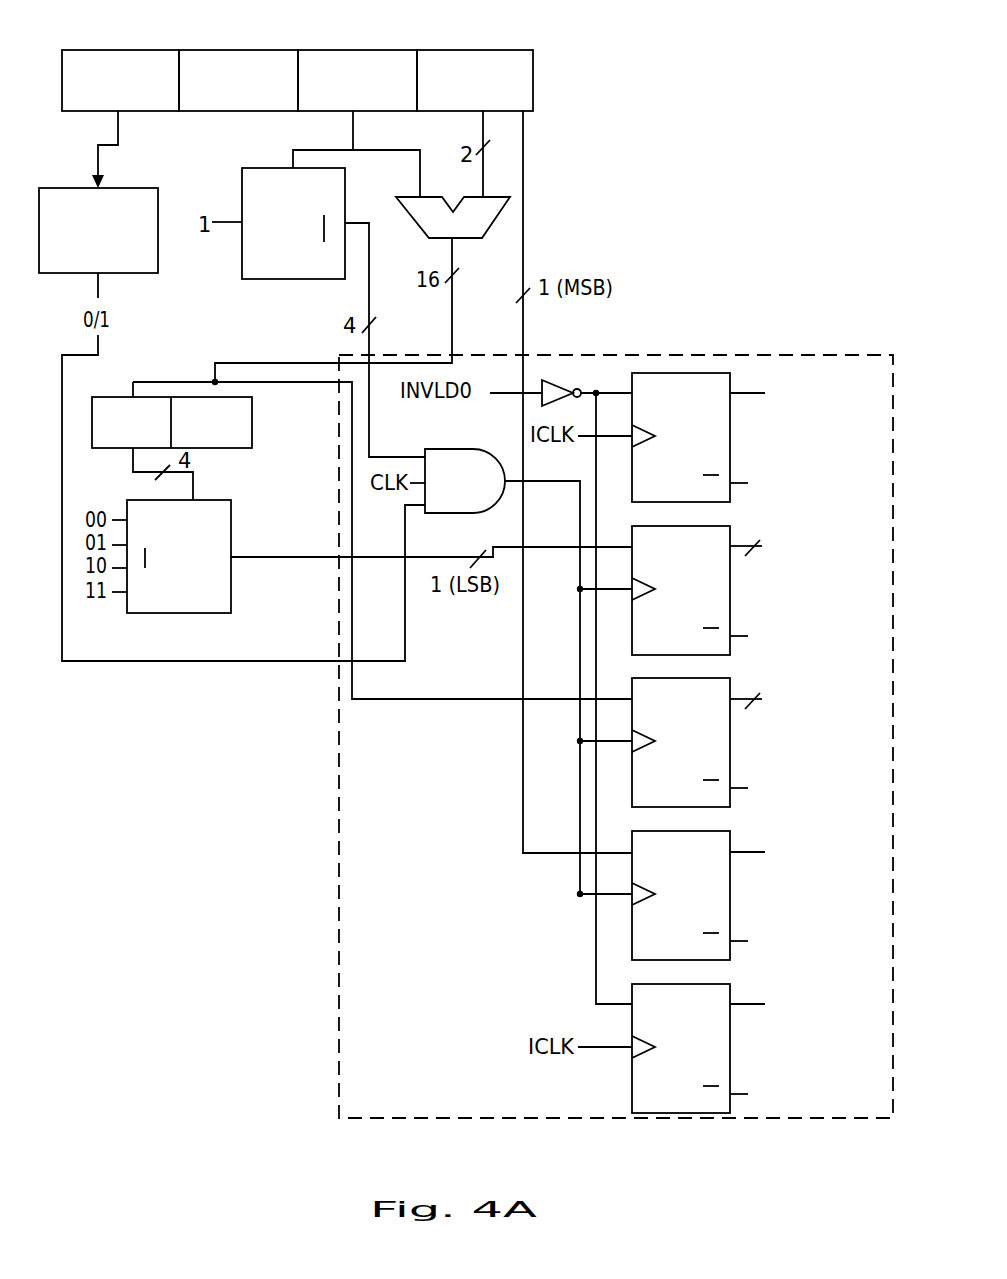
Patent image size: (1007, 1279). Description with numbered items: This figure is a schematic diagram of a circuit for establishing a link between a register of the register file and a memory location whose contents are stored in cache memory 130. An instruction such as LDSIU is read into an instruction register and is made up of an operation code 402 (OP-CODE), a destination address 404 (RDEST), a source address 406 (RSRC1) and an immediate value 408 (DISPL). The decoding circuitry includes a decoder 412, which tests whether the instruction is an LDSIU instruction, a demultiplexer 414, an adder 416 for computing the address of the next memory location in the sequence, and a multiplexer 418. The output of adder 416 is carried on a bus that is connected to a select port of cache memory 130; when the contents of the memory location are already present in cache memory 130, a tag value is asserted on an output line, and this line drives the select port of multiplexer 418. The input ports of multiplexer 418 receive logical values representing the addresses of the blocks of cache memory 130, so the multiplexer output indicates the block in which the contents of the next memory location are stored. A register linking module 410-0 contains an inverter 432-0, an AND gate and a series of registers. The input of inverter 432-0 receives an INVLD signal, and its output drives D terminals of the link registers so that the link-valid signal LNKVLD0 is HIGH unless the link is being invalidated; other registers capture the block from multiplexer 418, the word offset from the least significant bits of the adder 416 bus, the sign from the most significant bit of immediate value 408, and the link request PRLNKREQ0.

The operation code 402 is at (110, 50).
The destination address 404 is at (222, 50).
The source address 406 is at (350, 50).
The immediate value 408 is at (462, 50).
The decoder 412 is at (130, 273).
The demultiplexer 414 is at (242, 192).
The adder 416 is at (441, 239).
The multiplexer 418 is at (231, 585).
The cache memory 130 is at (118, 455).
The inverter 432-0 is at (556, 381).
The register linking module 410-0 is at (778, 333).